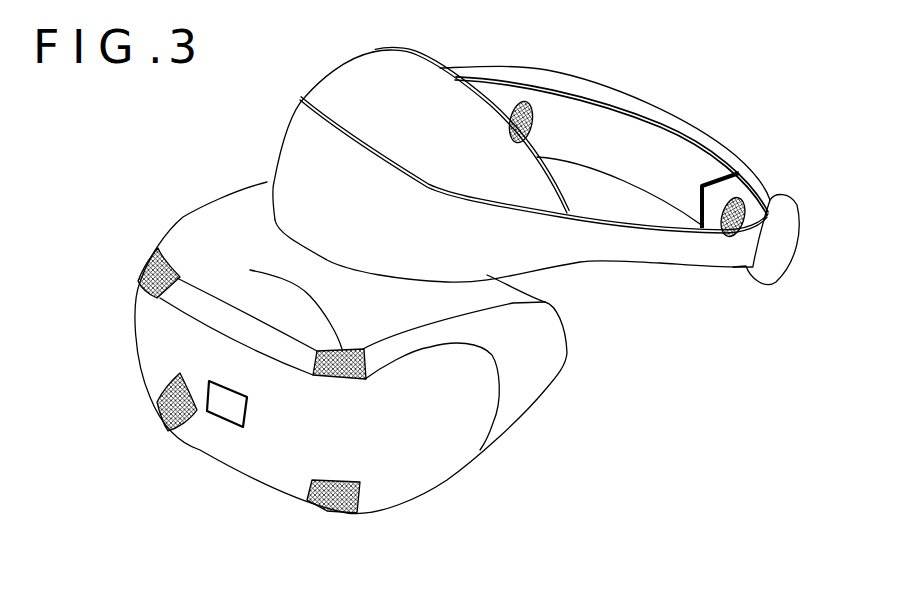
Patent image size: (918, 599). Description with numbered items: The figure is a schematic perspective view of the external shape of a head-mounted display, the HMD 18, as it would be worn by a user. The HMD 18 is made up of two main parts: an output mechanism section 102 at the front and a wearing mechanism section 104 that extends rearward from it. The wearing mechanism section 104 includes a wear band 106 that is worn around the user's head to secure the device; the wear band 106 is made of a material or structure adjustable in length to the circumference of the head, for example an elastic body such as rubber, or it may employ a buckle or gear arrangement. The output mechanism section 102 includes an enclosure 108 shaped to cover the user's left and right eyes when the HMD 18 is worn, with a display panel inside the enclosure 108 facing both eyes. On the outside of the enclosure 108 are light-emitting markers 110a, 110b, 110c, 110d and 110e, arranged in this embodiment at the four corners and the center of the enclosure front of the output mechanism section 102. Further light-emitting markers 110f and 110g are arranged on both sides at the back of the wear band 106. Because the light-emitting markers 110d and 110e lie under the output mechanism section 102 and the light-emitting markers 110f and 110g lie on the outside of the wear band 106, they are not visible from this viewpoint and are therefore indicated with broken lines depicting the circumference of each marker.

The head-mounted display 18 is at (684, 453).
The output mechanism section 102 is at (130, 176).
The wearing mechanism section 104 is at (803, 113).
The wear band 106 is at (660, 264).
The enclosure 108 is at (447, 483).
The light-emitting marker 110a is at (159, 250).
The light-emitting marker 110b is at (250, 270).
The light-emitting marker 110c is at (222, 420).
The light-emitting marker 110d is at (170, 430).
The light-emitting marker 110e is at (315, 515).
The light-emitting marker 110f is at (737, 196).
The light-emitting marker 110g is at (530, 102).